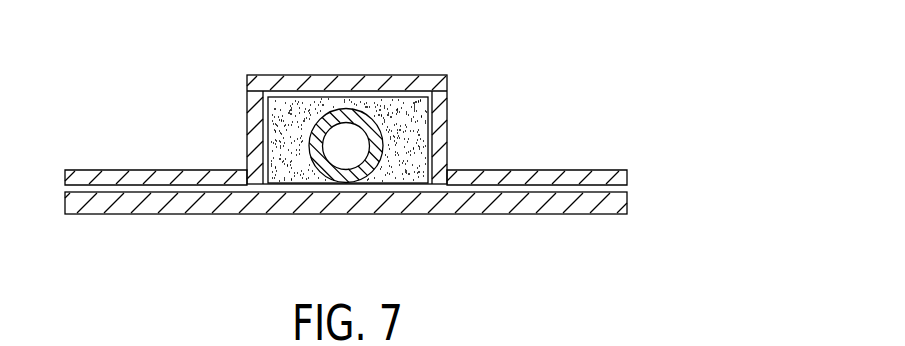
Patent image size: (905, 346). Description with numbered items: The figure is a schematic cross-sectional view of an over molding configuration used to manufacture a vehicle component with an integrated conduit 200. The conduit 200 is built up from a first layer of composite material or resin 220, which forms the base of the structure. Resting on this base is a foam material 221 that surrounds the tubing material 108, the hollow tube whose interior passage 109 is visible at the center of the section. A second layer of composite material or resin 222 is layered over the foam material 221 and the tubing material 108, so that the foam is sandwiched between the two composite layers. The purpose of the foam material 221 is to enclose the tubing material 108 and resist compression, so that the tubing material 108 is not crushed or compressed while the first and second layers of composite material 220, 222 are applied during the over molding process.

The conduit 200 is at (476, 114).
The first layer of composite material or resin 220 is at (137, 200).
The foam material 221 is at (288, 117).
The second layer of composite material or resin 222 is at (143, 170).
The tubing material 108 is at (340, 163).
The tube lumen 109 is at (353, 153).